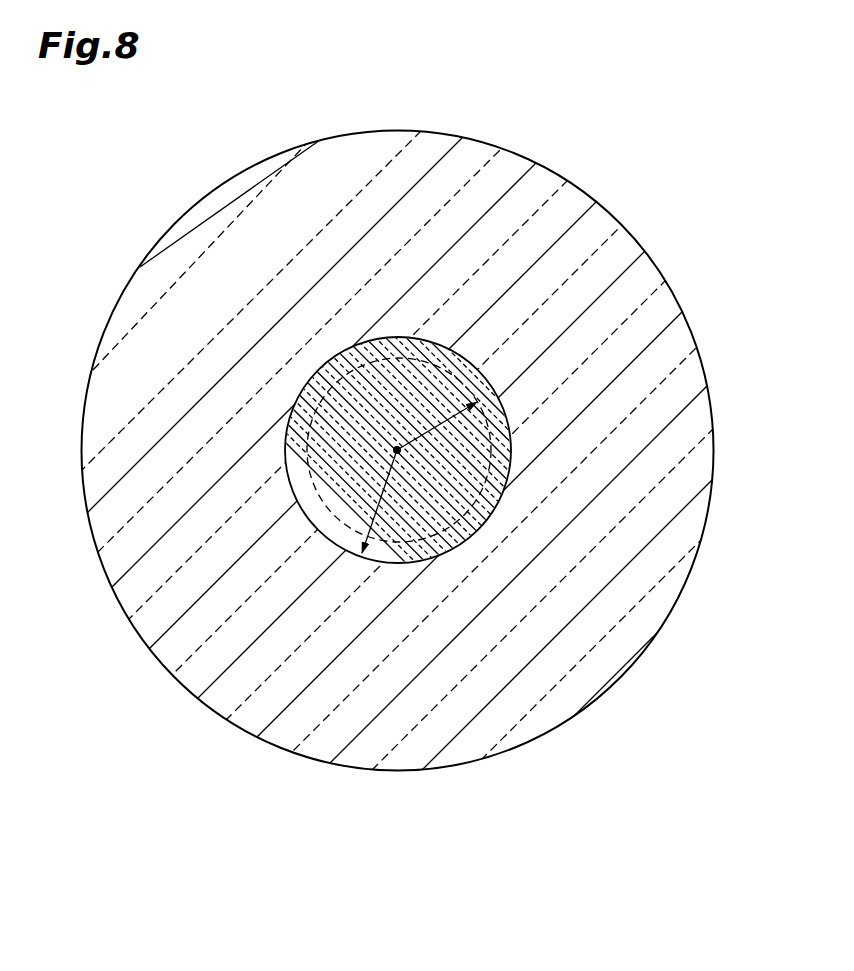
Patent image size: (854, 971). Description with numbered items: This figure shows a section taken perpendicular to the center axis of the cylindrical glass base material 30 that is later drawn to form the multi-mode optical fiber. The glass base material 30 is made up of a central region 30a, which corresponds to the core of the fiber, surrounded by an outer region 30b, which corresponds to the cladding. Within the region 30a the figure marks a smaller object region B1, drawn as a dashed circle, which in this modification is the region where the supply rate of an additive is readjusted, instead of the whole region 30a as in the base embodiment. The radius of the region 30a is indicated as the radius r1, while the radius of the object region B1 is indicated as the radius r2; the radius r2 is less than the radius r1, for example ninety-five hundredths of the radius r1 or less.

The glass base material 30 is at (638, 152).
The region corresponding to the core 30a is at (438, 510).
The region corresponding to the cladding 30b is at (710, 452).
The object region for readjusting supply rate of additive B1 is at (322, 502).
The radius of region 30a r1 is at (405, 562).
The radius of region B1 r2 is at (441, 428).